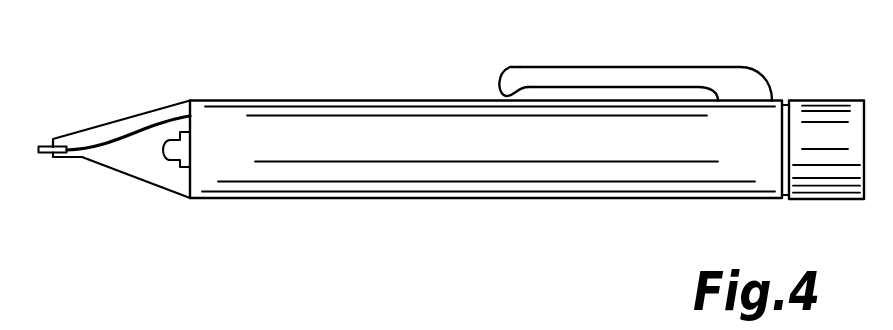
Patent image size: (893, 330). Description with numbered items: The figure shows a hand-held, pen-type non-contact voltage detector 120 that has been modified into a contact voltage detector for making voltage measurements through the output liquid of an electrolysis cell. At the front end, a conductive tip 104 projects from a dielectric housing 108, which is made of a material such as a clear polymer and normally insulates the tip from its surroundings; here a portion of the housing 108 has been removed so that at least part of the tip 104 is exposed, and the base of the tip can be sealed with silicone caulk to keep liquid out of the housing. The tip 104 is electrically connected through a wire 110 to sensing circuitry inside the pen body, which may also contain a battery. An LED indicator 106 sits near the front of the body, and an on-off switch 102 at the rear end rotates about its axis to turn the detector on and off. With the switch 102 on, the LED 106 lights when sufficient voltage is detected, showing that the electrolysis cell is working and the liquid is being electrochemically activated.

The on-off switch 102 is at (808, 101).
The tip 104 is at (42, 157).
The LED indicator 106 is at (167, 161).
The dielectric housing 108 is at (106, 124).
The wire 110 is at (149, 128).
The non-contact voltage detector 120 is at (425, 188).